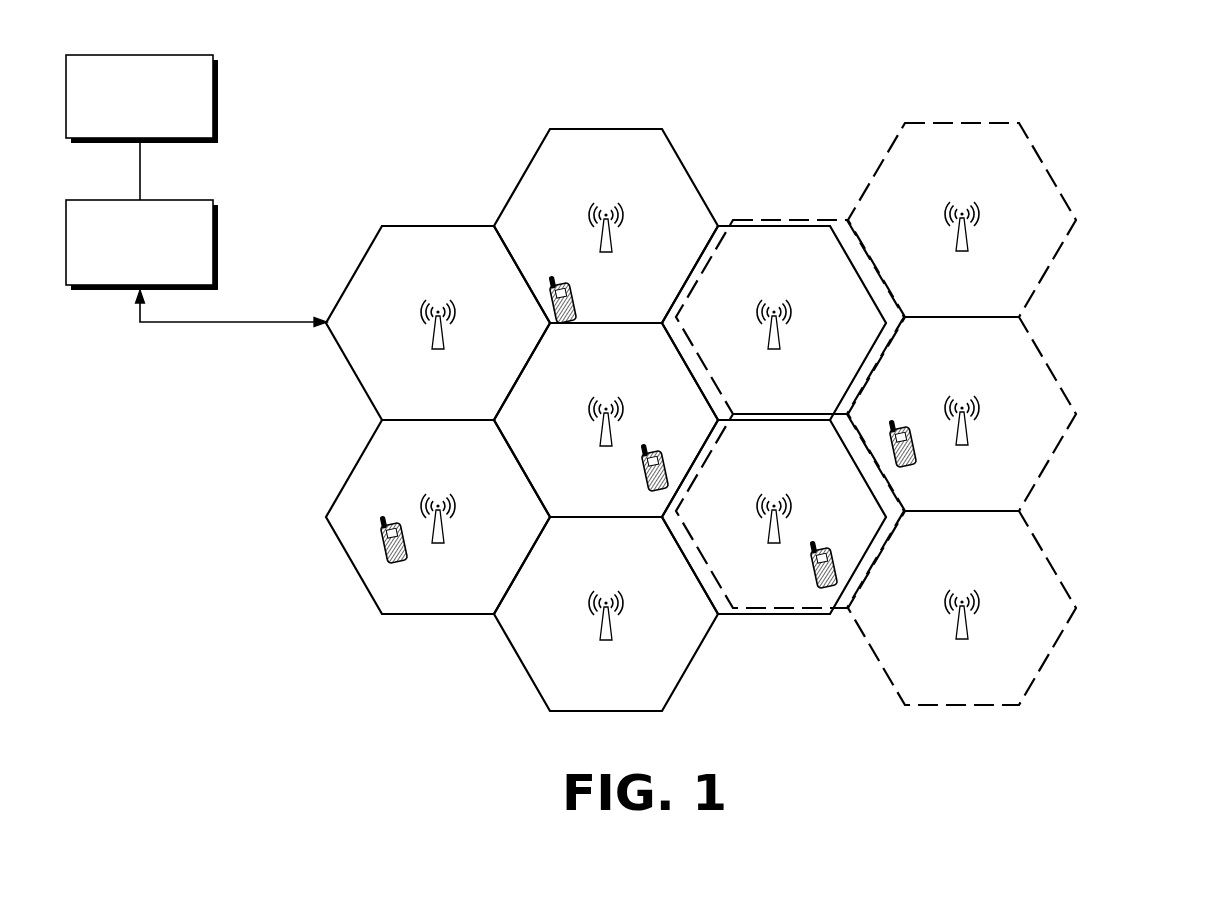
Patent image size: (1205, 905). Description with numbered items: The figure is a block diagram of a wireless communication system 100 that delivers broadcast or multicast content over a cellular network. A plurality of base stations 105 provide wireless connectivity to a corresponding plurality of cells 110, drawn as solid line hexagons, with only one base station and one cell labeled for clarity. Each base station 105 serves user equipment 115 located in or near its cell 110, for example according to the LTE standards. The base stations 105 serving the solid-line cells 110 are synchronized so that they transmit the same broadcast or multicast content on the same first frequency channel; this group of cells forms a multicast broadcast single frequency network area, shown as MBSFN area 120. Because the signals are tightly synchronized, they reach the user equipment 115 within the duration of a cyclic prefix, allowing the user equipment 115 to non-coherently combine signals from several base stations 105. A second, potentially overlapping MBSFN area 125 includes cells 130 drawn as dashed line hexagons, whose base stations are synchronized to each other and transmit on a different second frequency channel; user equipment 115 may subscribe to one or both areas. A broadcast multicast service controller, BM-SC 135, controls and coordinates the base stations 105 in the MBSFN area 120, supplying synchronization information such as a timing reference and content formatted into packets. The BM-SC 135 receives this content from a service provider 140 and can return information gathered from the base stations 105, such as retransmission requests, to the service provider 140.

The wireless communication system 100 is at (1090, 104).
The base station 105 is at (597, 235).
The cell 110 is at (532, 155).
The user equipment 115 is at (577, 308).
The MBSFN area 120 is at (583, 99).
The MBSFN area 125 is at (910, 104).
The cell 130 is at (1063, 198).
The broadcast multicast service controller (BM-SC) 135 is at (220, 244).
The service provider 140 is at (220, 98).